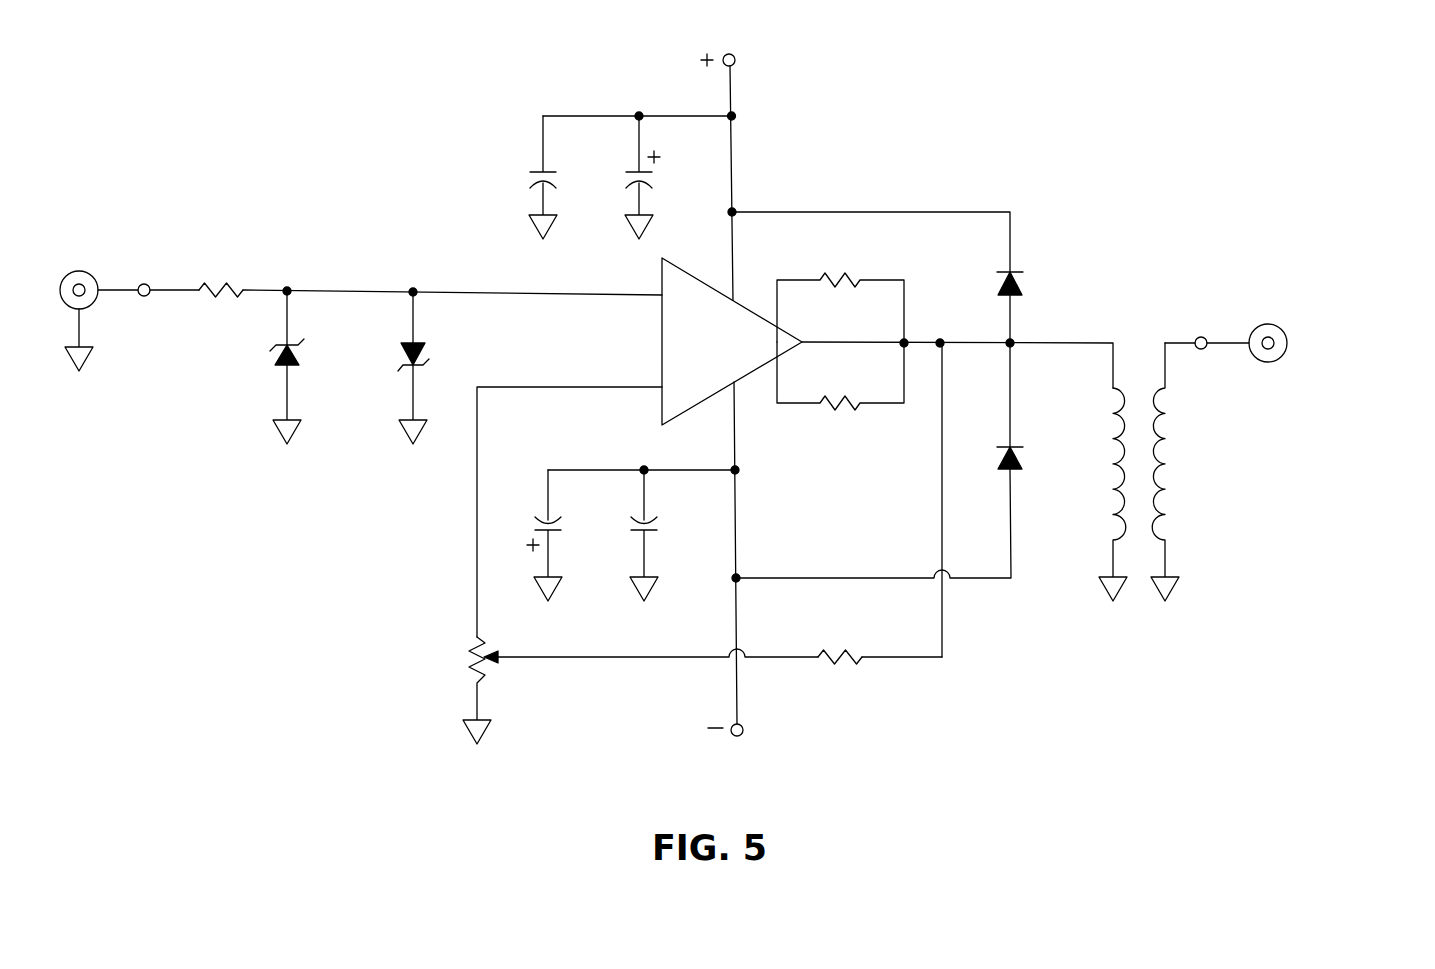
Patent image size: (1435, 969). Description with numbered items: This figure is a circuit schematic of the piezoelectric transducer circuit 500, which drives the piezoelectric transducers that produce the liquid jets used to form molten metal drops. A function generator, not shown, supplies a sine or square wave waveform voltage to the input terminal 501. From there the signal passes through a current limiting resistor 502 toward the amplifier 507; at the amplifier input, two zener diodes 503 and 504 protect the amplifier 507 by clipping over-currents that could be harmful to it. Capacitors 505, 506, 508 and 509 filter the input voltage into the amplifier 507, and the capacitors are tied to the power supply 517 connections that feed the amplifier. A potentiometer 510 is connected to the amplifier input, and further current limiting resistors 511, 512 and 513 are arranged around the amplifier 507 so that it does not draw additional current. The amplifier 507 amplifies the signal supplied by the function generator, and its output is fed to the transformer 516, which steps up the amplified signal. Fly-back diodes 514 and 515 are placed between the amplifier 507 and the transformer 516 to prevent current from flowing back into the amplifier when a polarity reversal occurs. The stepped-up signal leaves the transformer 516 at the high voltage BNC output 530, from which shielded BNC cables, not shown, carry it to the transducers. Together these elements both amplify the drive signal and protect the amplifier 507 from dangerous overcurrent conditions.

The piezoelectric transducer circuit 500 is at (373, 177).
The input terminal 501 is at (87, 305).
The current limiting resistor 502 is at (225, 285).
The zener diode 503 is at (277, 352).
The zener diode 504 is at (400, 345).
The capacitor 505 is at (535, 168).
The capacitor 506 is at (657, 178).
The amplifier 507 is at (660, 330).
The capacitor 508 is at (565, 522).
The capacitor 509 is at (660, 522).
The potentiometer 510 is at (470, 657).
The current limiting resistor 511 is at (850, 648).
The current limiting resistor 512 is at (838, 415).
The current limiting resistor 513 is at (857, 275).
The fly-back diode 514 is at (1021, 283).
The fly-back diode 515 is at (1022, 458).
The transformer 516 is at (1162, 467).
The power supply 517 is at (736, 57).
The high voltage BNC output connector 530 is at (1285, 338).